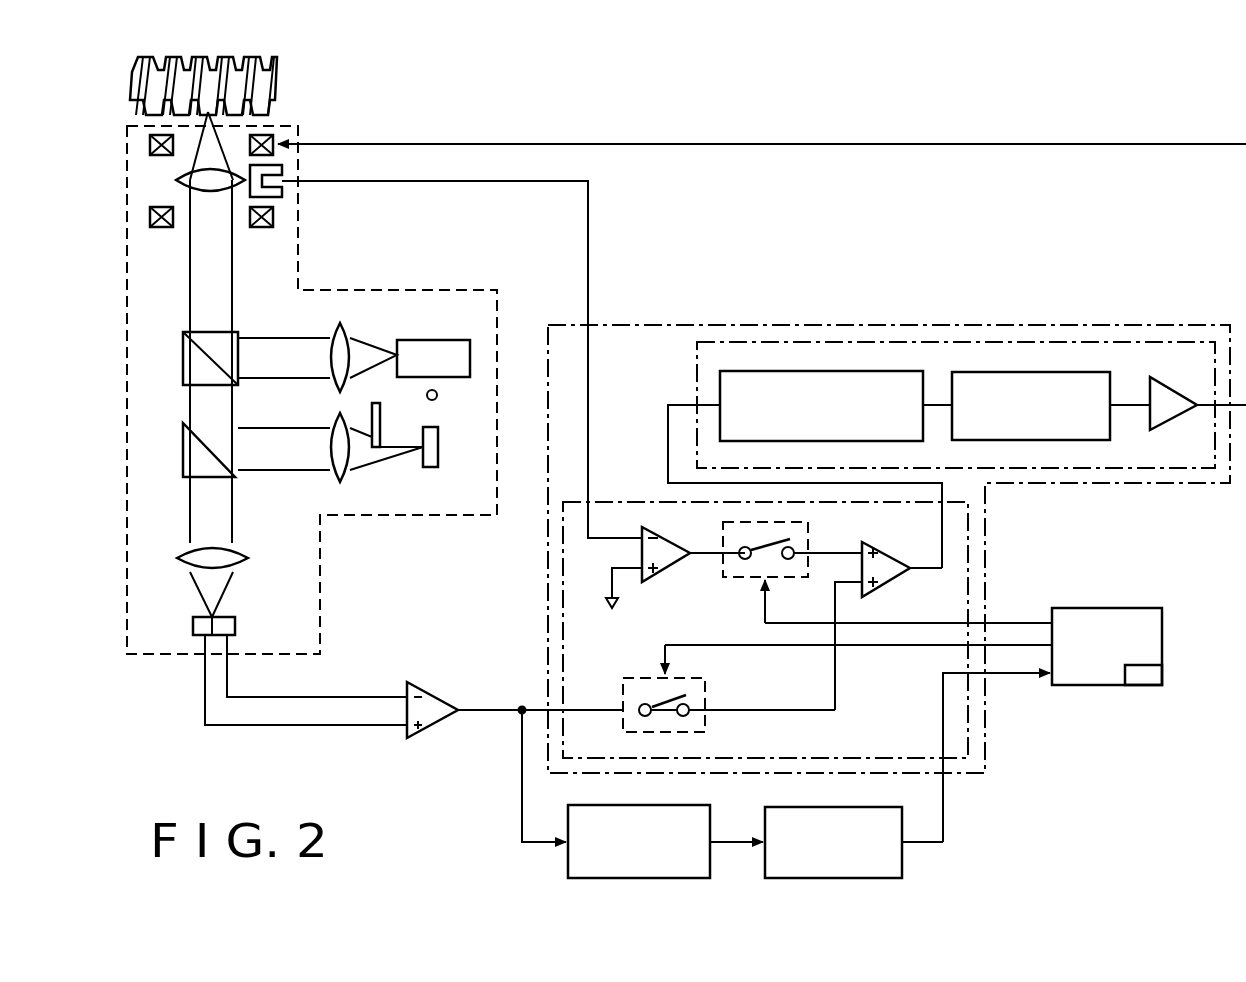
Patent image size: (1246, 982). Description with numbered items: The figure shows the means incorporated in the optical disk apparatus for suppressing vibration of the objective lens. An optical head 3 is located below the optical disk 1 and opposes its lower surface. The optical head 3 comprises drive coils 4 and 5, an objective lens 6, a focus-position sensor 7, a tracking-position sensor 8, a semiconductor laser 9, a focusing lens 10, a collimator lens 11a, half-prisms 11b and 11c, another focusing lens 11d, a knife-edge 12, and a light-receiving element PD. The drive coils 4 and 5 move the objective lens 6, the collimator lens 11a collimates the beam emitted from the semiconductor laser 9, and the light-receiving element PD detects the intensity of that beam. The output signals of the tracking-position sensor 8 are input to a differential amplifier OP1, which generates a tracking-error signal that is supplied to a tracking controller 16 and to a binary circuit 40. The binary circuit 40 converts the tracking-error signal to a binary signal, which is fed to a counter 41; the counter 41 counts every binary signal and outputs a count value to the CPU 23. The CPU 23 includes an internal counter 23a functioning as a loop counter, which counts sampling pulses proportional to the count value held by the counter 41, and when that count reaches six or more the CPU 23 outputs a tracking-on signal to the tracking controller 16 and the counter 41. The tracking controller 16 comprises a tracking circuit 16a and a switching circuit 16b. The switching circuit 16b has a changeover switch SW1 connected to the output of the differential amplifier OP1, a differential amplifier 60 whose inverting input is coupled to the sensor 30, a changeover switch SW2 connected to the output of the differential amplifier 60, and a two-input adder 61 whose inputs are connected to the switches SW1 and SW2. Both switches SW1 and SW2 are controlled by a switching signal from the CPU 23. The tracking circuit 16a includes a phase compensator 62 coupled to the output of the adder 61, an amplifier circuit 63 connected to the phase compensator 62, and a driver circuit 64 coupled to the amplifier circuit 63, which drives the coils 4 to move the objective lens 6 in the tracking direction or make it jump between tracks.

The optical disk 1 is at (135, 76).
The optical head 3 is at (298, 262).
The drive coils 4 is at (150, 146).
The drive coils 5 is at (150, 218).
The objective lens 6 is at (212, 194).
The sensor 30 is at (284, 172).
The collimator lens 11a is at (352, 326).
The half-prism 11b is at (238, 332).
The half-prism 11c is at (235, 477).
The focusing lens 11d is at (345, 478).
The semiconductor laser 9 is at (437, 340).
The knife-edge 12 is at (380, 425).
The light-receiving element PD is at (437, 396).
The focus-position sensor 7 is at (438, 450).
The focusing lens 10 is at (246, 560).
The tracking-position sensor 8 is at (235, 627).
The differential amplifier OP1 is at (446, 672).
The tracking controller 16 is at (634, 336).
The tracking circuit 16a is at (897, 352).
The switching circuit 16b is at (962, 548).
The phase compensator 62 is at (720, 392).
The amplifier circuit 63 is at (952, 388).
The driver circuit 64 is at (1182, 392).
The differential amplifier 60 is at (670, 548).
The two-input adder 61 is at (900, 582).
The changeover switch SW1 is at (705, 688).
The changeover switch SW2 is at (808, 538).
The CPU 23 is at (1093, 608).
The internal counter 23a is at (1145, 685).
The binary circuit 40 is at (712, 830).
The counter 41 is at (903, 830).